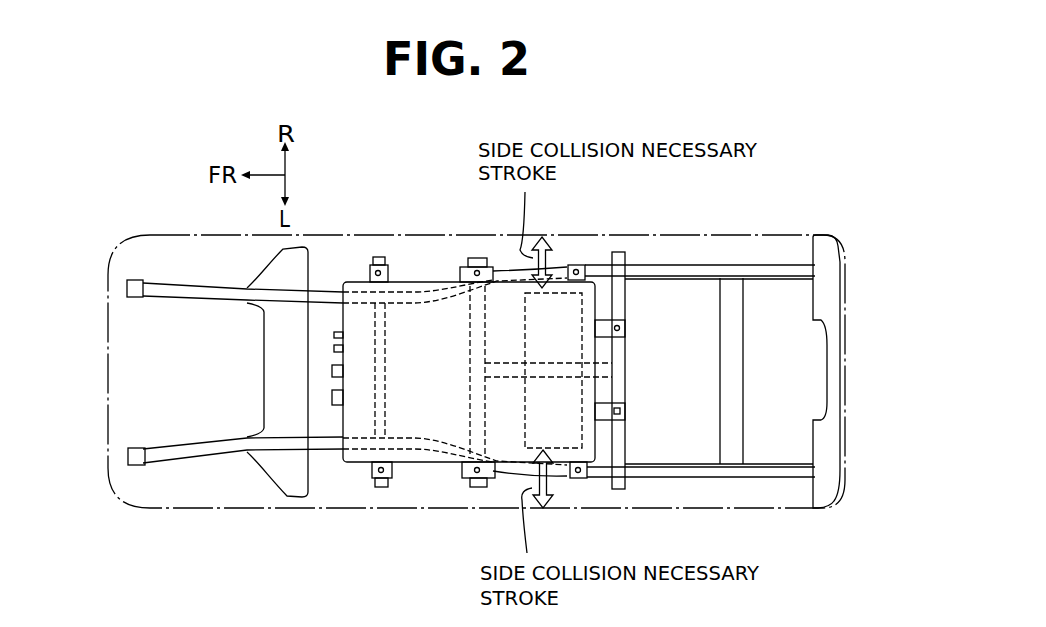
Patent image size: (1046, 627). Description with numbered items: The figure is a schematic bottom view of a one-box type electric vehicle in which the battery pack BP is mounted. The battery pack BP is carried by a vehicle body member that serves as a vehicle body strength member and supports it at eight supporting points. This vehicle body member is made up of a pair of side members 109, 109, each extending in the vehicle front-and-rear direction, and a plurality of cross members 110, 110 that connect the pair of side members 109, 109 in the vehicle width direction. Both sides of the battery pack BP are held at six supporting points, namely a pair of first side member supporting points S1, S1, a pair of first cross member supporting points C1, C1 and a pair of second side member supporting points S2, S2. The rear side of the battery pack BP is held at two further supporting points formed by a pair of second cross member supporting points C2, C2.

The cross member 110 is at (266, 368).
The side member 109 is at (657, 265).
The battery pack BP is at (410, 273).
The first side member supporting point S1 is at (369, 272).
The first cross member supporting point C1 is at (463, 258).
The second side member supporting point S2 is at (577, 262).
The second cross member supporting point C2 is at (625, 327).